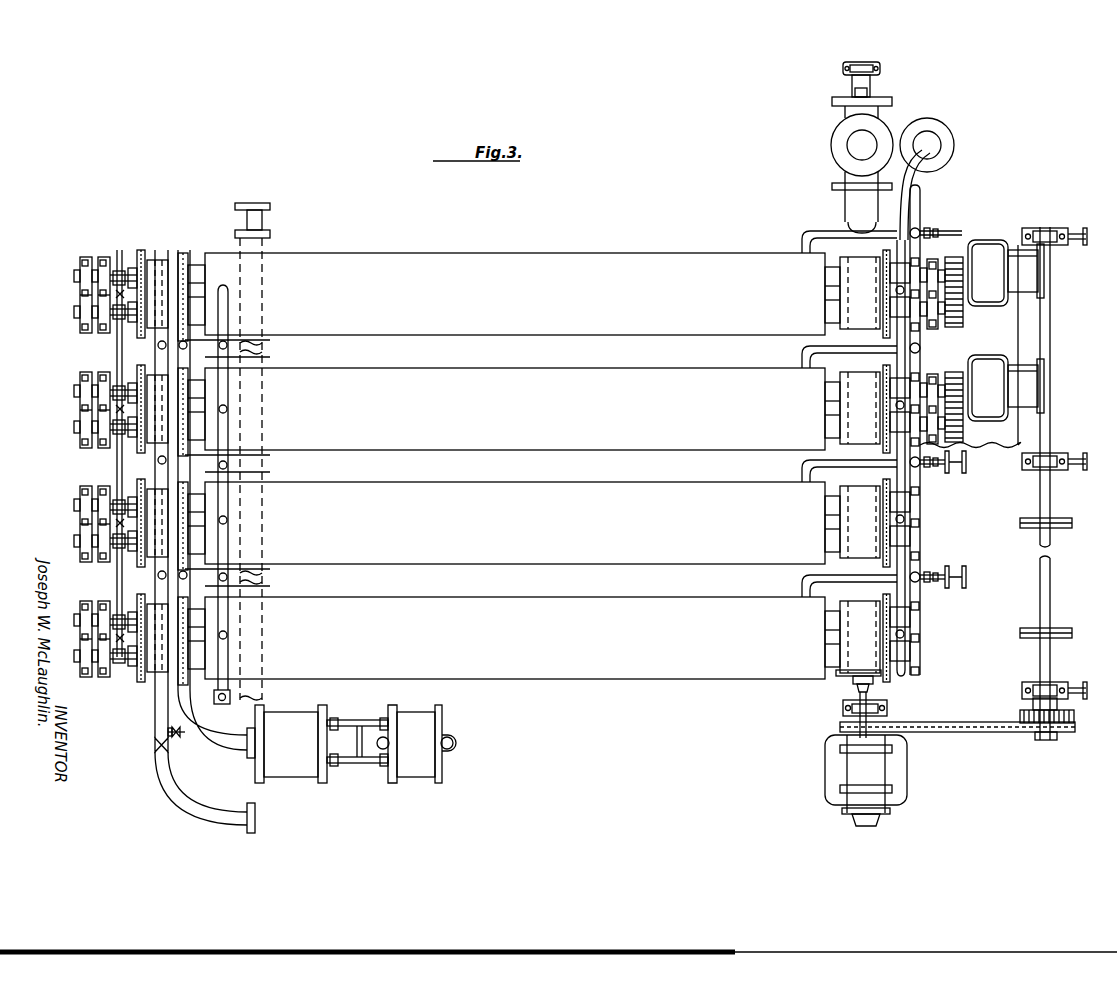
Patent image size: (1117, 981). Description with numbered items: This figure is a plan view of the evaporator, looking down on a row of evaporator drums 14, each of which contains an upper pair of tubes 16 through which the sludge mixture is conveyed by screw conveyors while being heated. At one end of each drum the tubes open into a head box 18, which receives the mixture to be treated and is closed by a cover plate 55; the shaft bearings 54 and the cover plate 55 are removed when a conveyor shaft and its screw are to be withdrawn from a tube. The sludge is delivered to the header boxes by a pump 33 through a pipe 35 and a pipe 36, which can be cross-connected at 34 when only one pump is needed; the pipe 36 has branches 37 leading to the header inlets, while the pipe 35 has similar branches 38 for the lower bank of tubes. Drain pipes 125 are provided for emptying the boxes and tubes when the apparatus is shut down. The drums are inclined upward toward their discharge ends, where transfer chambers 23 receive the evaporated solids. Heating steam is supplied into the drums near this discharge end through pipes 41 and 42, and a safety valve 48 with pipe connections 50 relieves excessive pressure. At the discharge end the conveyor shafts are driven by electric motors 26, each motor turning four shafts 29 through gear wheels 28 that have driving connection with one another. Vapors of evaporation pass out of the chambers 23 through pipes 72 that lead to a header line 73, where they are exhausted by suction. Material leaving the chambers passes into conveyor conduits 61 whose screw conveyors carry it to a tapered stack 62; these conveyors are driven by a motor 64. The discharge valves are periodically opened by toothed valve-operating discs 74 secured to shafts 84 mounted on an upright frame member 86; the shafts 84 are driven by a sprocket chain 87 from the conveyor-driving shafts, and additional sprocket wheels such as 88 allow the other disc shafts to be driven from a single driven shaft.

The evaporator drum 14 is at (516, 262).
The upper pair of tubes 16 is at (194, 262).
The head box 18 is at (160, 262).
The transfer chamber 23 is at (855, 272).
The electric motor 26 is at (986, 246).
The gear wheel 28 is at (954, 300).
The shaft 29 is at (941, 270).
The pump 33 is at (300, 764).
The cross-connection 34 is at (186, 736).
The pipe 35 is at (160, 467).
The pipe 36 is at (224, 467).
The branch 37 is at (190, 280).
The branch 38 is at (150, 250).
The steam pipe 41 is at (920, 200).
The steam pipe 42 is at (810, 230).
The safety valve 48 is at (226, 706).
The pipe connection 50 is at (229, 468).
The shaft bearing 54 is at (86, 290).
The cover plate 55 is at (124, 268).
The conveyor conduit 61 is at (848, 201).
The stack 62 is at (875, 131).
The motor 64 is at (845, 767).
The pipe 72 is at (905, 612).
The header line 73 is at (933, 142).
The valve-operating disc 74 is at (1060, 518).
The shaft 84 is at (1046, 417).
The upright frame member 86 is at (1068, 235).
The sprocket chain 87 is at (990, 732).
The sprocket wheel 88 is at (1074, 718).
The drain pipe 125 is at (116, 259).